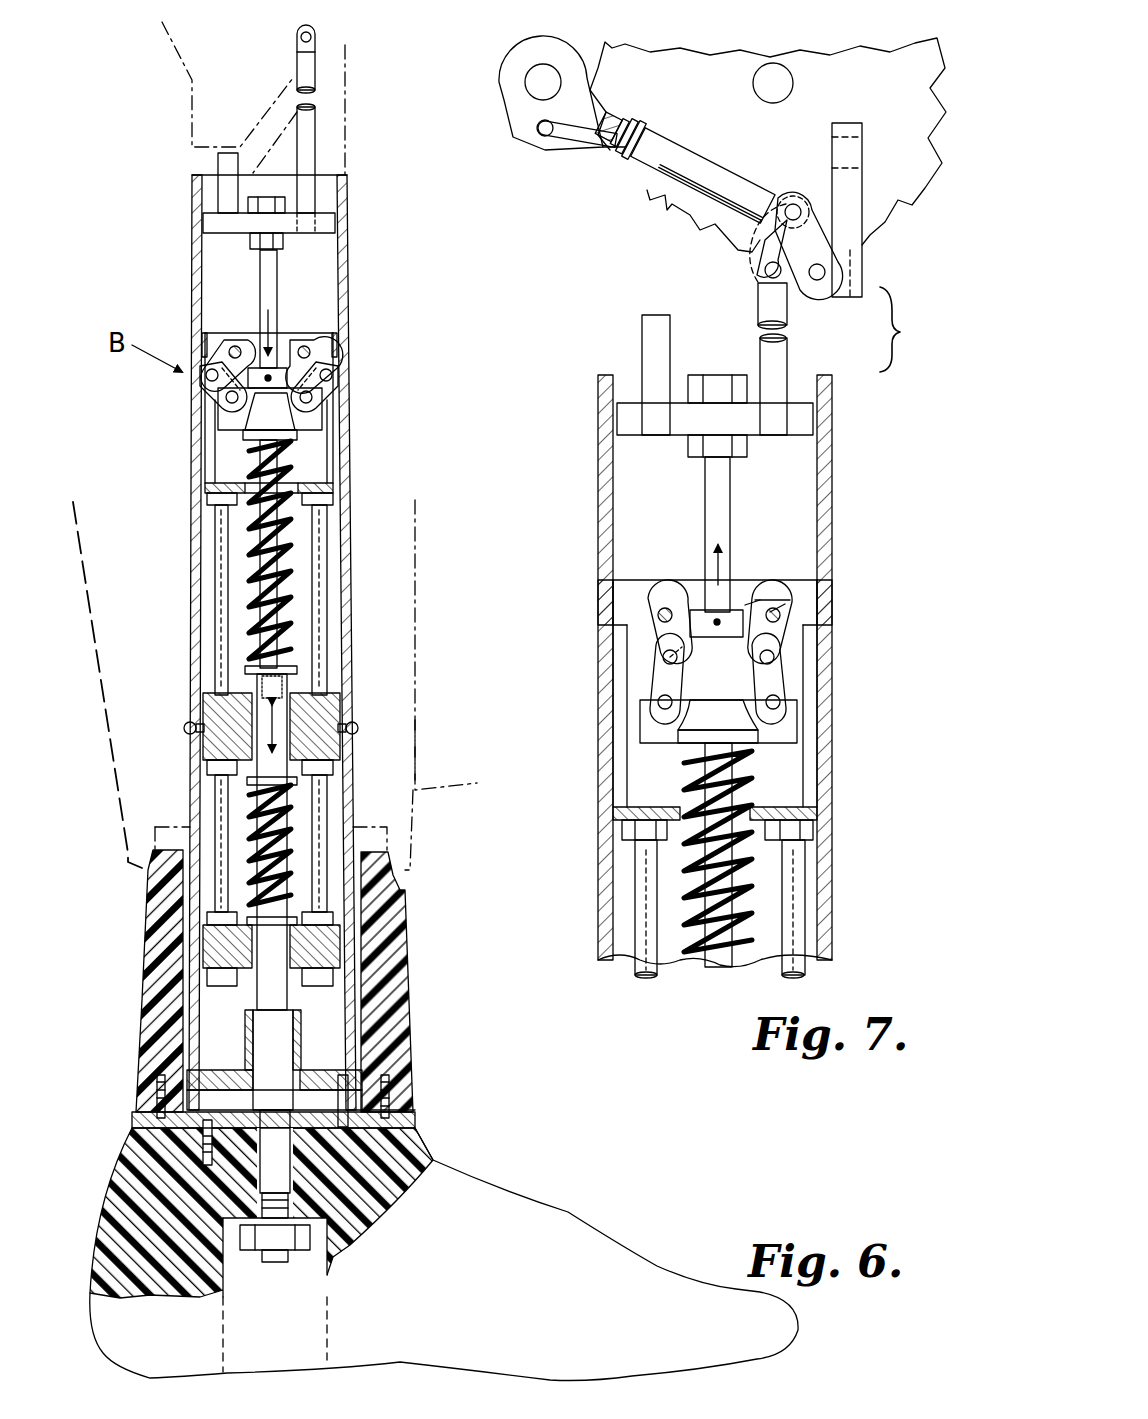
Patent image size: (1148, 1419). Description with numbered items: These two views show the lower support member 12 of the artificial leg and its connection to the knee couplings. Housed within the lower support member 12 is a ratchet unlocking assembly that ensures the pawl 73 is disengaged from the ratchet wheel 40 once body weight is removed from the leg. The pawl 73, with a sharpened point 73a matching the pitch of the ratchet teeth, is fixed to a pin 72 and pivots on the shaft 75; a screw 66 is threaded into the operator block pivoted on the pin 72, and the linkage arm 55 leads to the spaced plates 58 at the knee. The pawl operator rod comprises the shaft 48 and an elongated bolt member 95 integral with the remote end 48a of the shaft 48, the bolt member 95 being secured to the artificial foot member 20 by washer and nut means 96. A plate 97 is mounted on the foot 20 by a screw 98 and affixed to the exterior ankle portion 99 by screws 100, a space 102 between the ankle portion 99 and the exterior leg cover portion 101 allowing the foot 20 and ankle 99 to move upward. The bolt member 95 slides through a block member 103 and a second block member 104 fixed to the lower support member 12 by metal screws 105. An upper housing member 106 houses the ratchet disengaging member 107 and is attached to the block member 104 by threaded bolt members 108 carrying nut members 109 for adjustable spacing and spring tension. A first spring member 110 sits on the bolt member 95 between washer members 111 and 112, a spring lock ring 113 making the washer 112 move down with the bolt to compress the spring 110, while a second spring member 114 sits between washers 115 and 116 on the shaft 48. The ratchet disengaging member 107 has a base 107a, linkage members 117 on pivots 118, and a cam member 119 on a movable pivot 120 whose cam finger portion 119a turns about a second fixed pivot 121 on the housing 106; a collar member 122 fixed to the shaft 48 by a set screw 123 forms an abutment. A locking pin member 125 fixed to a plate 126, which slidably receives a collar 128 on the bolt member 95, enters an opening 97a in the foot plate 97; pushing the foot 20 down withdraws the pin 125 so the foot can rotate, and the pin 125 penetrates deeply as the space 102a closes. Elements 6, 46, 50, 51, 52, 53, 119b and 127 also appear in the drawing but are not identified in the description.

In FIG. 7, the frame bar 6 is at (864, 240).
In FIG. 6, the lower support member 12 is at (348, 735).
In FIG. 6, the artificial foot member 20 is at (568, 1218).
In FIG. 7, the ratchet wheel 40 is at (900, 195).
In FIG. 7, the pivot hole 46 is at (786, 68).
In FIG. 6, the shaft 48 is at (278, 292).
In FIG. 7, the shaft 48 is at (732, 508).
In FIG. 6, the remote end of shaft 48a is at (290, 690).
In FIG. 6, the plate 50 is at (336, 222).
In FIG. 7, the plate 50 is at (800, 420).
In FIG. 7, the nut 51 is at (688, 385).
In FIG. 7, the nut 52 is at (750, 450).
In FIG. 7, the pin 53 is at (642, 345).
In FIG. 6, the linkage arm 55 is at (316, 130).
In FIG. 7, the linkage arm 55 is at (788, 358).
In FIG. 7, the spaced plates 58 is at (820, 200).
In FIG. 7, the screw 66 is at (657, 192).
In FIG. 7, the pin 72 is at (540, 138).
In FIG. 7, the pawl 73 is at (512, 62).
In FIG. 7, the sharpened point 73a is at (608, 142).
In FIG. 7, the shaft 75 is at (527, 90).
In FIG. 6, the elongated bolt member 95 is at (288, 718).
In FIG. 6, the washer and nut means 96 is at (310, 1238).
In FIG. 6, the plate 97 is at (134, 1118).
In FIG. 6, the opening 97a is at (410, 1130).
In FIG. 6, the screw 98 is at (200, 1158).
In FIG. 6, the exterior artificial ankle portion 99 is at (140, 1025).
In FIG. 6, the screws 100 is at (156, 1090).
In FIG. 6, the exterior leg cover portion 101 is at (478, 783).
In FIG. 6, the space 102 is at (390, 840).
In FIG. 6, the space 102a is at (405, 1070).
In FIG. 6, the block member 103 is at (340, 945).
In FIG. 6, the second block member 104 is at (340, 710).
In FIG. 6, the metal screws 105 is at (358, 728).
In FIG. 6, the upper housing member 106 is at (338, 345).
In FIG. 7, the upper housing member 106 is at (635, 612).
In FIG. 6, the ratchet disengaging member 107 is at (318, 412).
In FIG. 7, the ratchet disengaging member 107 is at (640, 715).
In FIG. 7, the base 107a is at (797, 735).
In FIG. 6, the threaded bolt members 108 is at (215, 583).
In FIG. 7, the threaded bolt members 108 is at (636, 880).
In FIG. 6, the nut members 109 is at (340, 495).
In FIG. 7, the nut members 109 is at (815, 830).
In FIG. 6, the first spring member 110 is at (295, 810).
In FIG. 6, the washer member 111 is at (300, 918).
In FIG. 6, the washer member 112 is at (298, 783).
In FIG. 6, the spring lock ring 113 is at (240, 775).
In FIG. 6, the second spring member 114 is at (292, 460).
In FIG. 7, the second spring member 114 is at (755, 933).
In FIG. 6, the washer 115 is at (245, 668).
In FIG. 6, the washer 116 is at (243, 436).
In FIG. 7, the linkage members 117 is at (655, 690).
In FIG. 7, the pivot 118 is at (660, 710).
In FIG. 6, the cam member 119 is at (310, 345).
In FIG. 7, the cam member 119 is at (785, 620).
In FIG. 7, the cam finger portion 119a is at (690, 600).
In FIG. 7, the lower link 119b is at (660, 655).
In FIG. 6, the movable pivot 120 is at (330, 372).
In FIG. 7, the movable pivot 120 is at (775, 660).
In FIG. 6, the second fixed pivot 121 is at (233, 345).
In FIG. 7, the second fixed pivot 121 is at (775, 615).
In FIG. 7, the collar member 122 is at (750, 610).
In FIG. 7, the set screw 123 is at (715, 620).
In FIG. 6, the locking pin member 125 is at (355, 1095).
In FIG. 6, the plate 126 is at (340, 1078).
In FIG. 6, the sleeve 127 is at (245, 1040).
In FIG. 6, the collar 128 is at (275, 1035).